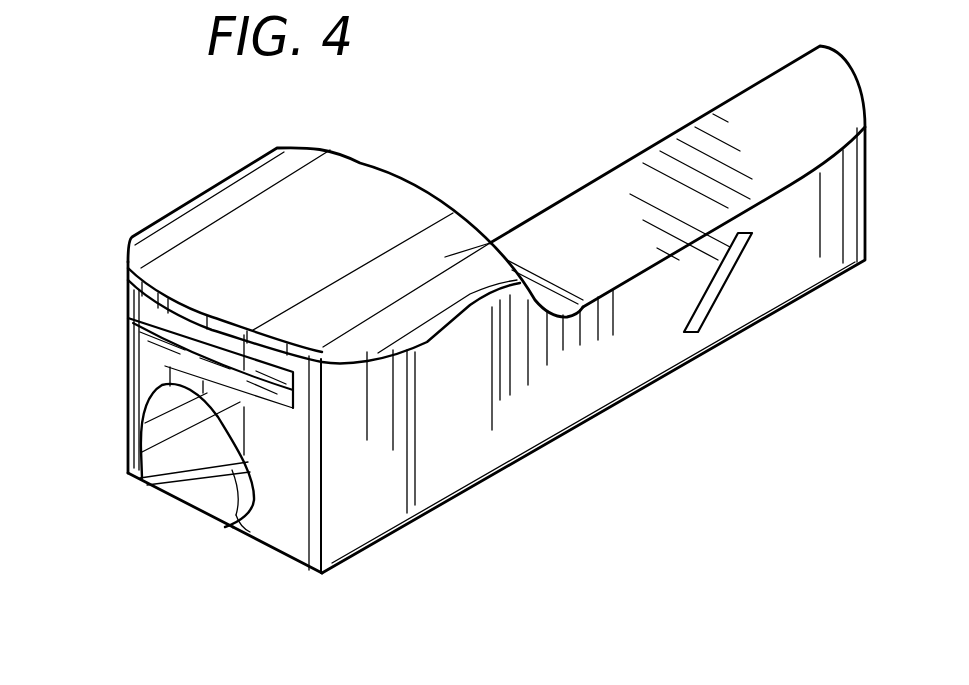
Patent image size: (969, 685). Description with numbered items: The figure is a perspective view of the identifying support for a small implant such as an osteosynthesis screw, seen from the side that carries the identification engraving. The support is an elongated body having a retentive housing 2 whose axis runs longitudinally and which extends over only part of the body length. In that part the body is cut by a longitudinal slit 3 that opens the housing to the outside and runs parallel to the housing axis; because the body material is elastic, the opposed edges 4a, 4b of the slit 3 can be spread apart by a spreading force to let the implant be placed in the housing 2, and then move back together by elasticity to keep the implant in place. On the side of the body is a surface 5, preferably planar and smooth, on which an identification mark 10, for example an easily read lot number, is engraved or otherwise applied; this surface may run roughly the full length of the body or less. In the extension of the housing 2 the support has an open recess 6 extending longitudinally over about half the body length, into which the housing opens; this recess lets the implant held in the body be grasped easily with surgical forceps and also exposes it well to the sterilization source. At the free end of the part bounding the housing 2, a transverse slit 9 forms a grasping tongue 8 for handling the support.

The retentive housing 2 is at (157, 430).
The longitudinal slit 3 is at (215, 507).
The opposed edge of the slit 4a is at (236, 528).
The opposed edge of the slit 4b is at (183, 503).
The surface 5 is at (742, 300).
The open recess 6 is at (378, 156).
The grasping tongue 8 is at (128, 270).
The transverse slit 9 is at (130, 320).
The identification mark 10 is at (580, 410).